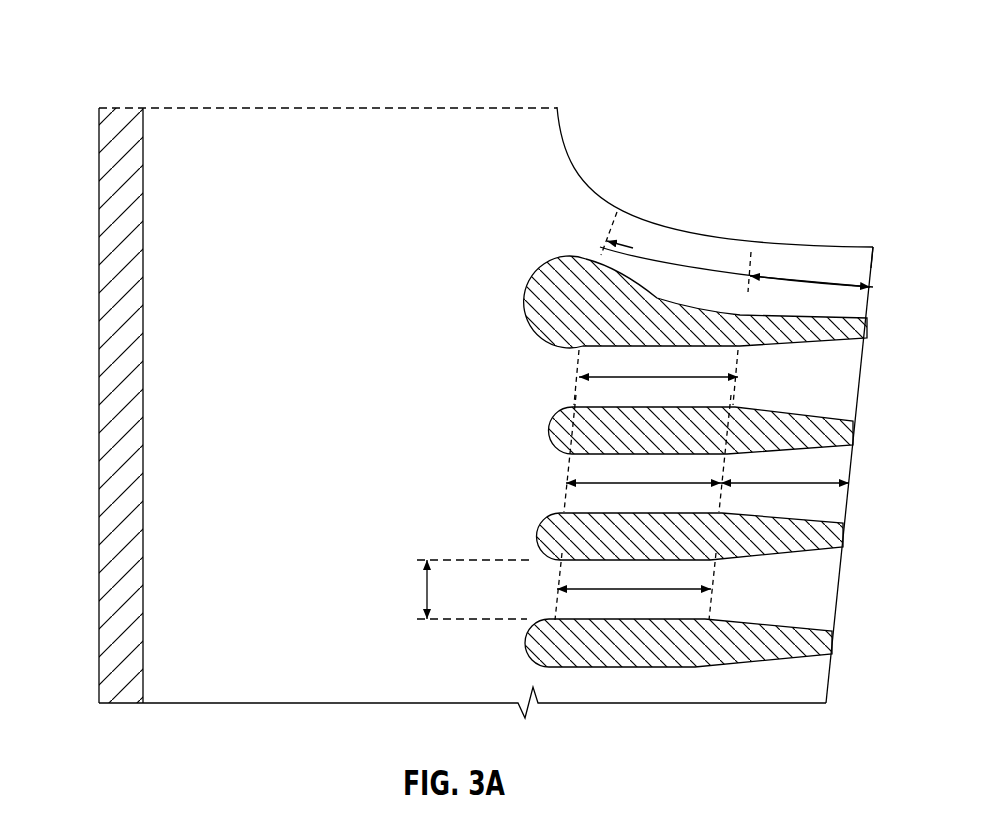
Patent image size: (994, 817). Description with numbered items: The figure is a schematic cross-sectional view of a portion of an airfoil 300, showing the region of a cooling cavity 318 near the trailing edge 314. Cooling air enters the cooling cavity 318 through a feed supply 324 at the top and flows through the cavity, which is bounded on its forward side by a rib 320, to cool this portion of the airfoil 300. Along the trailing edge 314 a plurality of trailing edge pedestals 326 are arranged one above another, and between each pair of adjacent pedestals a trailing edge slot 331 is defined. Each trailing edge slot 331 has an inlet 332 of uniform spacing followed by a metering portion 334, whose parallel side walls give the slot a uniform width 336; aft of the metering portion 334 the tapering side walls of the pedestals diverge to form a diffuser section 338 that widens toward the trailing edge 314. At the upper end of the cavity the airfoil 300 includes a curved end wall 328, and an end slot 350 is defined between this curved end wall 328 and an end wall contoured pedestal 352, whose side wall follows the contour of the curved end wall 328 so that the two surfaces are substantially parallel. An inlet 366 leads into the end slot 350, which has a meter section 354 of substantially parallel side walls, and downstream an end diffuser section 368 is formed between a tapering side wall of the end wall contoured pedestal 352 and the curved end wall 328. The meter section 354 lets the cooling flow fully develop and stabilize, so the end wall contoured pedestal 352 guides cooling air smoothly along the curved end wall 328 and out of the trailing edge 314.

The airfoil 300 is at (108, 30).
The trailing edge 314 is at (840, 601).
The cooling cavity 318 is at (322, 402).
The rib 320 is at (105, 400).
The feed supply 324 is at (368, 56).
The trailing edge pedestals 326 is at (850, 430).
The curved end wall 328 is at (873, 247).
The trailing edge slots 331 is at (597, 472).
The inlet 332 is at (566, 483).
The metering portion 334 is at (650, 485).
The uniform width 336 is at (426, 590).
The diffuser section 338 is at (795, 482).
The end slot 350 is at (705, 258).
The end wall contoured pedestal 352 is at (567, 312).
The meter section 354 is at (632, 247).
The inlet 366 is at (597, 210).
The end diffuser section 368 is at (770, 277).